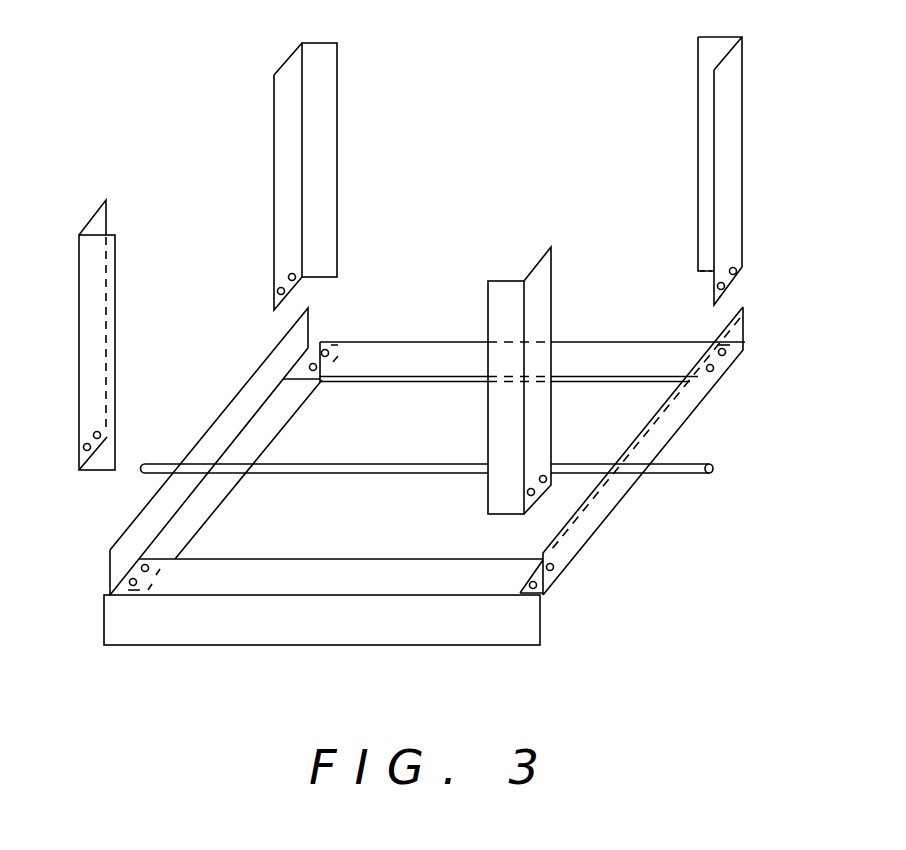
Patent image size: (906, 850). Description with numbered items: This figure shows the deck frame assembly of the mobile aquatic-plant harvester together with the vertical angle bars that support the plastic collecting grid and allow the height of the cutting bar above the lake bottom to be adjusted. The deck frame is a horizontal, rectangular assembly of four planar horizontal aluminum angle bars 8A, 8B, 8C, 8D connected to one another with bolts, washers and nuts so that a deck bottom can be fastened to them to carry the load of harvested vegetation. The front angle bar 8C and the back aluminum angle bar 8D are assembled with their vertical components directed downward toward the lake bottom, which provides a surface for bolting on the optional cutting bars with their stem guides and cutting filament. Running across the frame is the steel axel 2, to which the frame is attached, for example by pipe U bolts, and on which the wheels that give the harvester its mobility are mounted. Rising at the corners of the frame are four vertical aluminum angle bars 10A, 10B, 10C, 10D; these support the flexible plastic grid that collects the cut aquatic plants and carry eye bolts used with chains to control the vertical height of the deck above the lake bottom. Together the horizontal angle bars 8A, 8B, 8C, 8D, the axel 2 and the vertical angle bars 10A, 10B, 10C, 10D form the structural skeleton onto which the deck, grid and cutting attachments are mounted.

The steel axel 2 is at (153, 462).
The horizontal aluminum angle deck frame 8A is at (240, 410).
The horizontal aluminum angle deck frame 8B is at (670, 422).
The front angle bar 8C is at (460, 580).
The back aluminum angle bar 8D is at (393, 358).
The vertical aluminum angle bar 10A is at (88, 241).
The vertical aluminum angle bar 10B is at (290, 94).
The vertical aluminum angle bar 10C is at (505, 297).
The vertical aluminum angle bar 10D is at (706, 50).